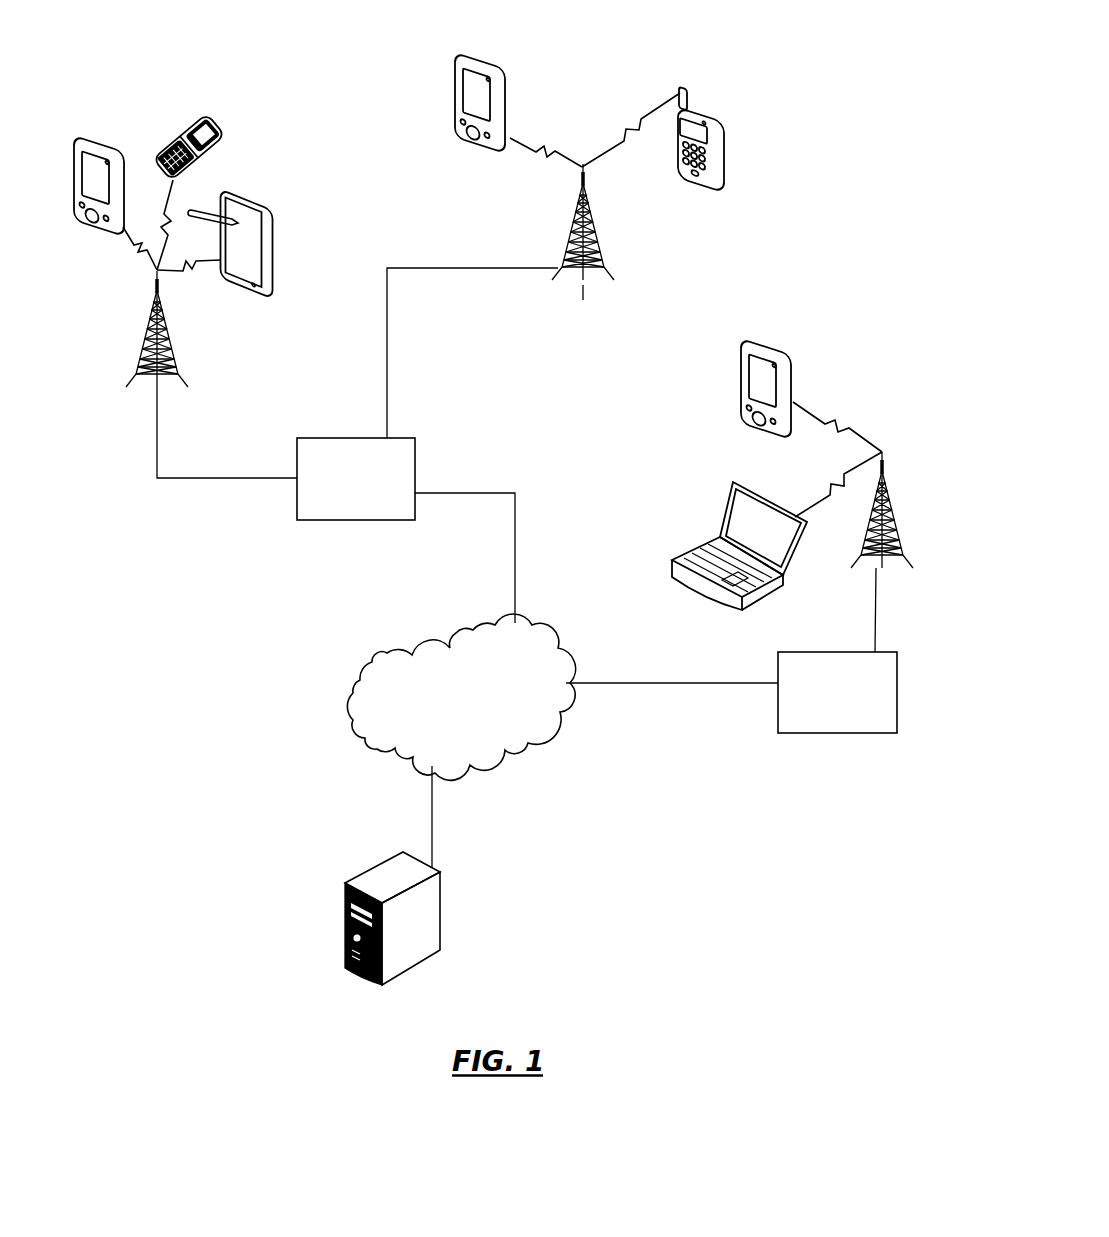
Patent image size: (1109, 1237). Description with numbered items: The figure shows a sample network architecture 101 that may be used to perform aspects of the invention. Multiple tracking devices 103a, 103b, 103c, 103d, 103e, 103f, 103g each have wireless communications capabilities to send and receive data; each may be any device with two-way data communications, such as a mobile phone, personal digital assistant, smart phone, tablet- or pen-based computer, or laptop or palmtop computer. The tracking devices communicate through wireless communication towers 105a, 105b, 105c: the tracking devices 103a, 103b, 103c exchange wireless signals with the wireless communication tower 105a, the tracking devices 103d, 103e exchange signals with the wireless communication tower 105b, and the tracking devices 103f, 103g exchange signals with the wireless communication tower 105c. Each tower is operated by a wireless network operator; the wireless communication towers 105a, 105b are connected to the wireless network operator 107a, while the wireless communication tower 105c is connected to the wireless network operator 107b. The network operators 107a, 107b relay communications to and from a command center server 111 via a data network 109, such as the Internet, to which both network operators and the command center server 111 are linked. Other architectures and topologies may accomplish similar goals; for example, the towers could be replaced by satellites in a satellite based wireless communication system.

The communication system 101 is at (820, 56).
The tracking device 103a is at (97, 134).
The tracking device 103b is at (223, 125).
The tracking device 103c is at (274, 217).
The tracking device 103d is at (509, 77).
The tracking device 103e is at (727, 123).
The tracking device 103f is at (796, 368).
The tracking device 103g is at (722, 512).
The wireless communication tower 105a is at (168, 328).
The wireless communication tower 105b is at (590, 203).
The wireless communication tower 105c is at (891, 501).
The wireless network operator 107a is at (416, 447).
The wireless network operator 107b is at (898, 660).
The data network 109 is at (358, 714).
The command center server 111 is at (443, 876).